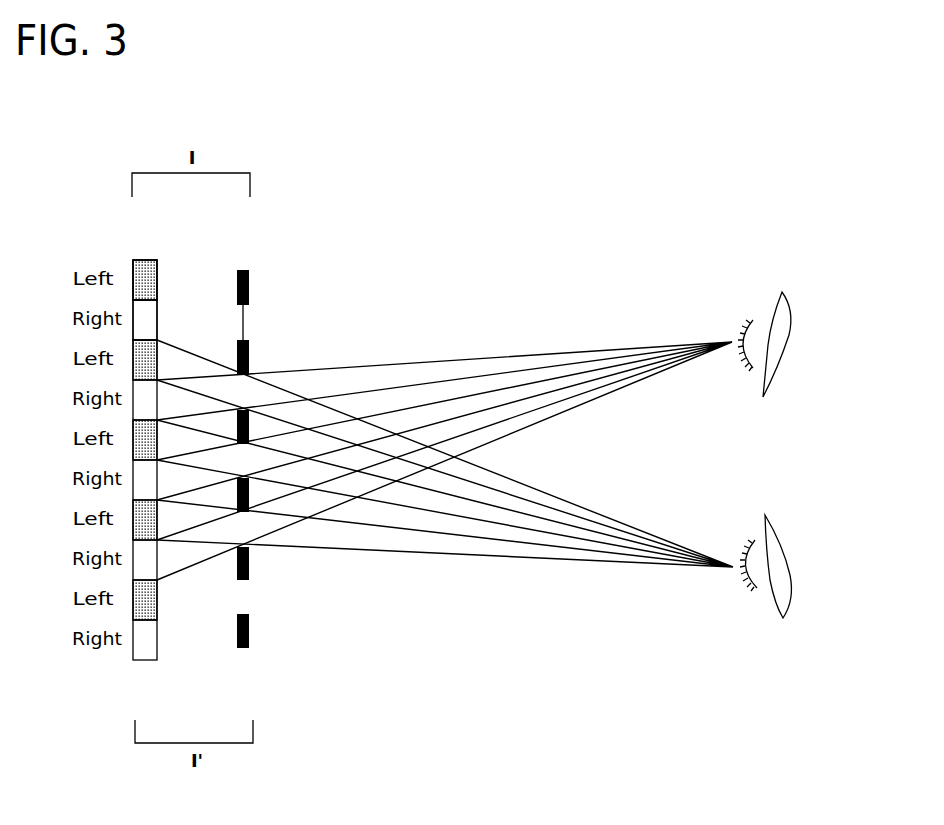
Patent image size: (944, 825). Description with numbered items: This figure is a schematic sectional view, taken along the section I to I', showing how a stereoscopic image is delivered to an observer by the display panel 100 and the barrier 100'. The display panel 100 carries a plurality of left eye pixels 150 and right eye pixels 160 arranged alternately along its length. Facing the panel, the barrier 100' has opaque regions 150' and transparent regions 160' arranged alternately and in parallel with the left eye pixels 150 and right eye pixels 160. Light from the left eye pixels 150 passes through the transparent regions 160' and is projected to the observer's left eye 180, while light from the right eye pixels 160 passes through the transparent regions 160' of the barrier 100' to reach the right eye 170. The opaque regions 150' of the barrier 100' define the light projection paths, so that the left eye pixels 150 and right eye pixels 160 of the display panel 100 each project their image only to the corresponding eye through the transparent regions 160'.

The display panel 100 is at (143, 460).
The left eye pixels 150 is at (172, 276).
The right eye pixels 160 is at (172, 316).
The barrier 100' is at (250, 456).
The opaque regions 150' is at (272, 281).
The transparent regions 160' is at (275, 316).
The right eye 170 is at (742, 318).
The left eye 180 is at (743, 538).